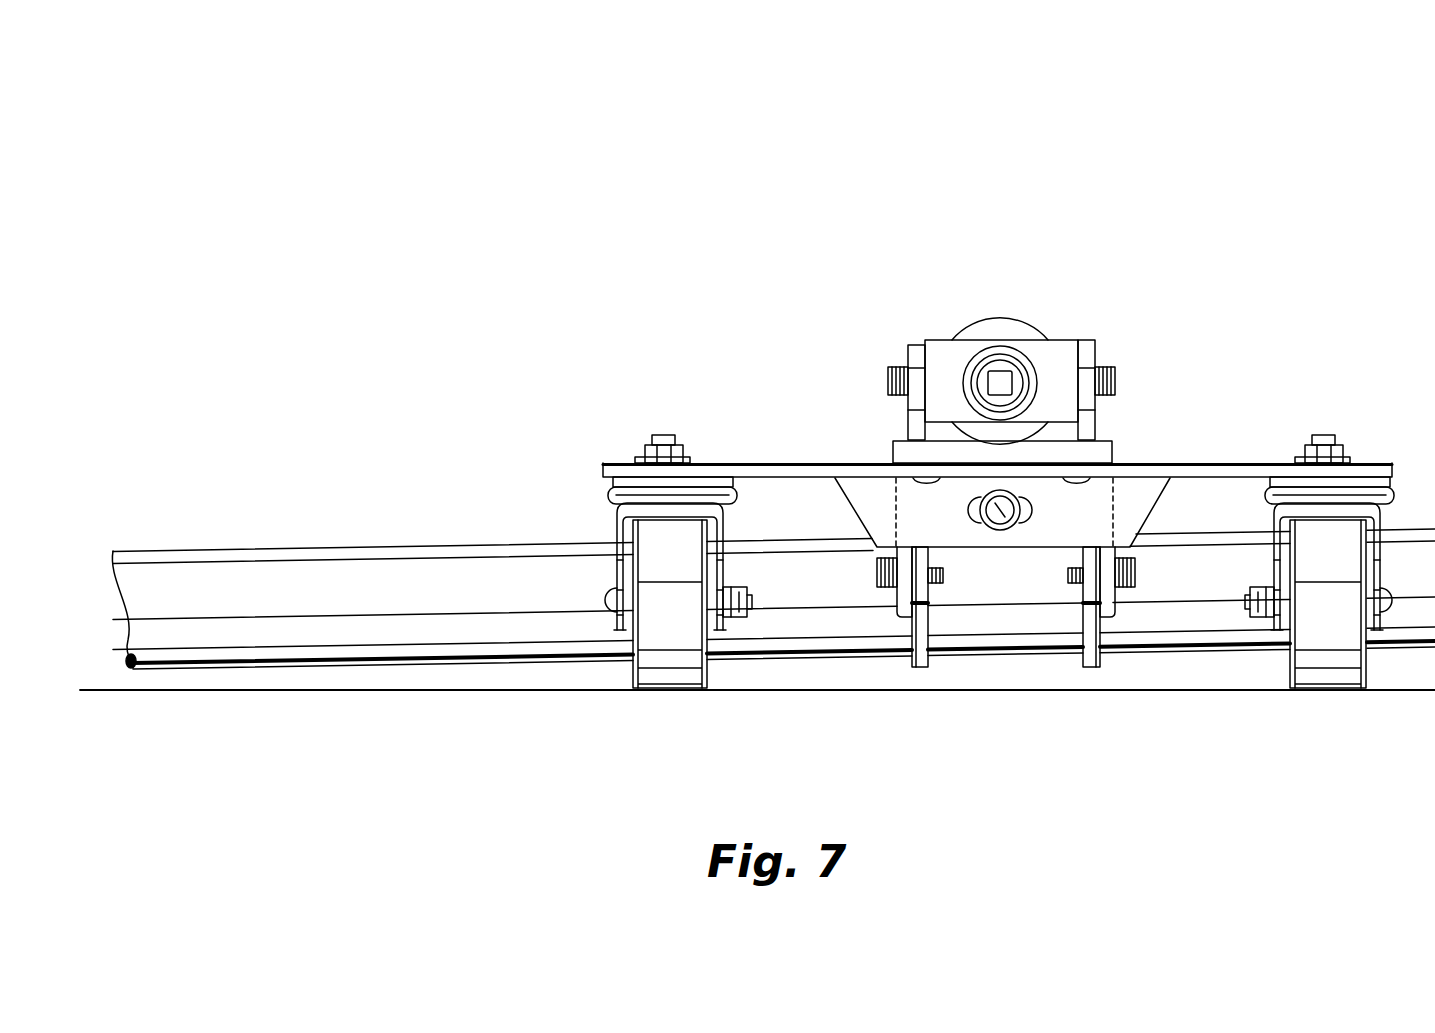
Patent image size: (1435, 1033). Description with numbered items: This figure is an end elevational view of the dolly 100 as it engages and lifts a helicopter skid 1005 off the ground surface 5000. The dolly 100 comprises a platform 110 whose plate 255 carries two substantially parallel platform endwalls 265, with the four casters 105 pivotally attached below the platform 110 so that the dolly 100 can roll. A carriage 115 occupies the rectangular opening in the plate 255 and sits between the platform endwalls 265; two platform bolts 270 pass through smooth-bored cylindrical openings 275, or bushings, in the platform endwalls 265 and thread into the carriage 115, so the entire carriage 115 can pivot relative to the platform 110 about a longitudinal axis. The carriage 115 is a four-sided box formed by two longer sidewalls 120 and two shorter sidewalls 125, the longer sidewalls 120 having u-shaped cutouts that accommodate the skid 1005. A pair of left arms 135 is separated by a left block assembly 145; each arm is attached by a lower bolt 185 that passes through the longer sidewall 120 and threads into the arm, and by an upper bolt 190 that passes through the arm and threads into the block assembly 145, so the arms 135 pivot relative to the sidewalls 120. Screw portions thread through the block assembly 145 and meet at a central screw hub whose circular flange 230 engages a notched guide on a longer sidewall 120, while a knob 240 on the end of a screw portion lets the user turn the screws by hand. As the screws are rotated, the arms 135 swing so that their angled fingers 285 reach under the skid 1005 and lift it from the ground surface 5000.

The dolly 100 is at (690, 213).
The casters 105 is at (598, 582).
The platform 110 is at (1024, 538).
The carriage 115 is at (1004, 361).
The longer sidewalls 120 is at (900, 605).
The shorter sidewalls 125 is at (920, 455).
The left arms 135 is at (912, 418).
The left block assembly 145 is at (1055, 365).
The lower bolt 185 is at (877, 575).
The upper bolt 190 is at (890, 378).
The circular flange 230 is at (990, 330).
The knob 240 is at (985, 382).
The plate 255 is at (703, 470).
The platform endwalls 265 is at (1131, 497).
The platform bolts 270 is at (1003, 527).
The smooth-bored cylindrical openings 275 is at (985, 527).
The angled finger 285 is at (910, 660).
The skid 1005 is at (265, 585).
The ground surface 5000 is at (116, 690).